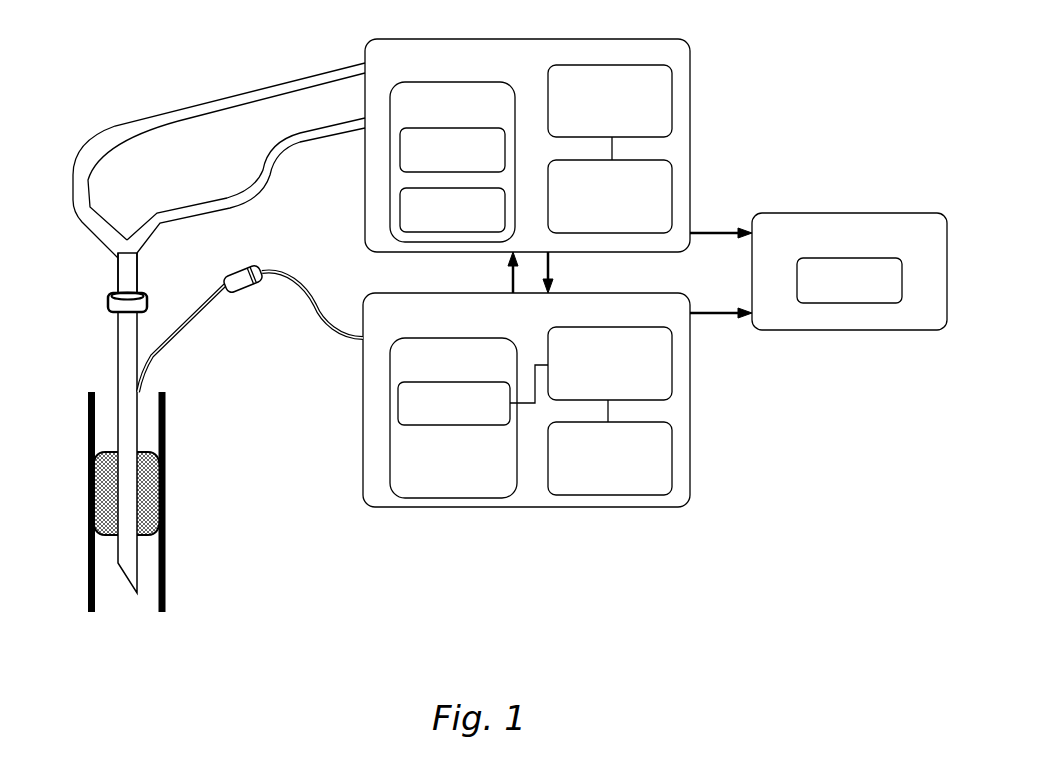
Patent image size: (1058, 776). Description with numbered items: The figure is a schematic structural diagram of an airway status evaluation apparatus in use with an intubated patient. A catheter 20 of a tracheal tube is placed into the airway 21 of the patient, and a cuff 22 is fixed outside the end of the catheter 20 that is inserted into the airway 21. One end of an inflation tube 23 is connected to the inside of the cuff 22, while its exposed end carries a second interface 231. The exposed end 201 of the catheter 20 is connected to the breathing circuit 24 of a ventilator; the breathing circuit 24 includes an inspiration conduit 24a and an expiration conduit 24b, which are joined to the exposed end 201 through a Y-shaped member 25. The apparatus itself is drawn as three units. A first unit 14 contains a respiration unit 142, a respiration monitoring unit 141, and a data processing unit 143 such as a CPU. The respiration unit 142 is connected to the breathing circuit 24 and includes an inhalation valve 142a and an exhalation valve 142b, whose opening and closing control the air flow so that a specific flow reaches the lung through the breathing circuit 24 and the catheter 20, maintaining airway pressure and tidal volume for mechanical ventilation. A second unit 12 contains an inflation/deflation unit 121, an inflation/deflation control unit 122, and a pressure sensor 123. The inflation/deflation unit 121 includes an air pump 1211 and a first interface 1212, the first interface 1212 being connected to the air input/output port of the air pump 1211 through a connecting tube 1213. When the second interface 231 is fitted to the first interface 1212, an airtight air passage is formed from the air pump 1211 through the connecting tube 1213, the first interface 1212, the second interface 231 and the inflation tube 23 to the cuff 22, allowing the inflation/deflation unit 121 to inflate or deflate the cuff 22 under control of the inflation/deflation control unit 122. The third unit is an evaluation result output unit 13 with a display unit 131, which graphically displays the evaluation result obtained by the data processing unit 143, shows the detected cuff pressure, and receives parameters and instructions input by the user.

The second unit 12 is at (487, 507).
The inflation/deflation unit 121 is at (445, 337).
The air pump 1211 is at (398, 410).
The first interface 1212 is at (260, 281).
The connecting tube 1213 is at (317, 333).
The inflation/deflation control unit 122 is at (672, 358).
The pressure sensor 123 is at (672, 452).
The evaluation result output unit 13 is at (820, 213).
The display unit 131 is at (837, 303).
The first unit 14 is at (690, 117).
The respiration monitoring unit 141 is at (672, 85).
The respiration unit 142 is at (438, 82).
The inhalation valve 142a is at (400, 153).
The exhalation valve 142b is at (437, 233).
The data processing unit 143 is at (672, 180).
The catheter 20 is at (118, 338).
The exposed end 201 is at (147, 300).
The airway 21 is at (163, 586).
The cuff 22 is at (98, 488).
The inflation tube 23 is at (187, 330).
The second interface 231 is at (243, 295).
The breathing circuit 24 is at (135, 115).
The inspiration conduit 24a is at (75, 170).
The expiration conduit 24b is at (197, 205).
The Y-shaped member 25 is at (117, 268).